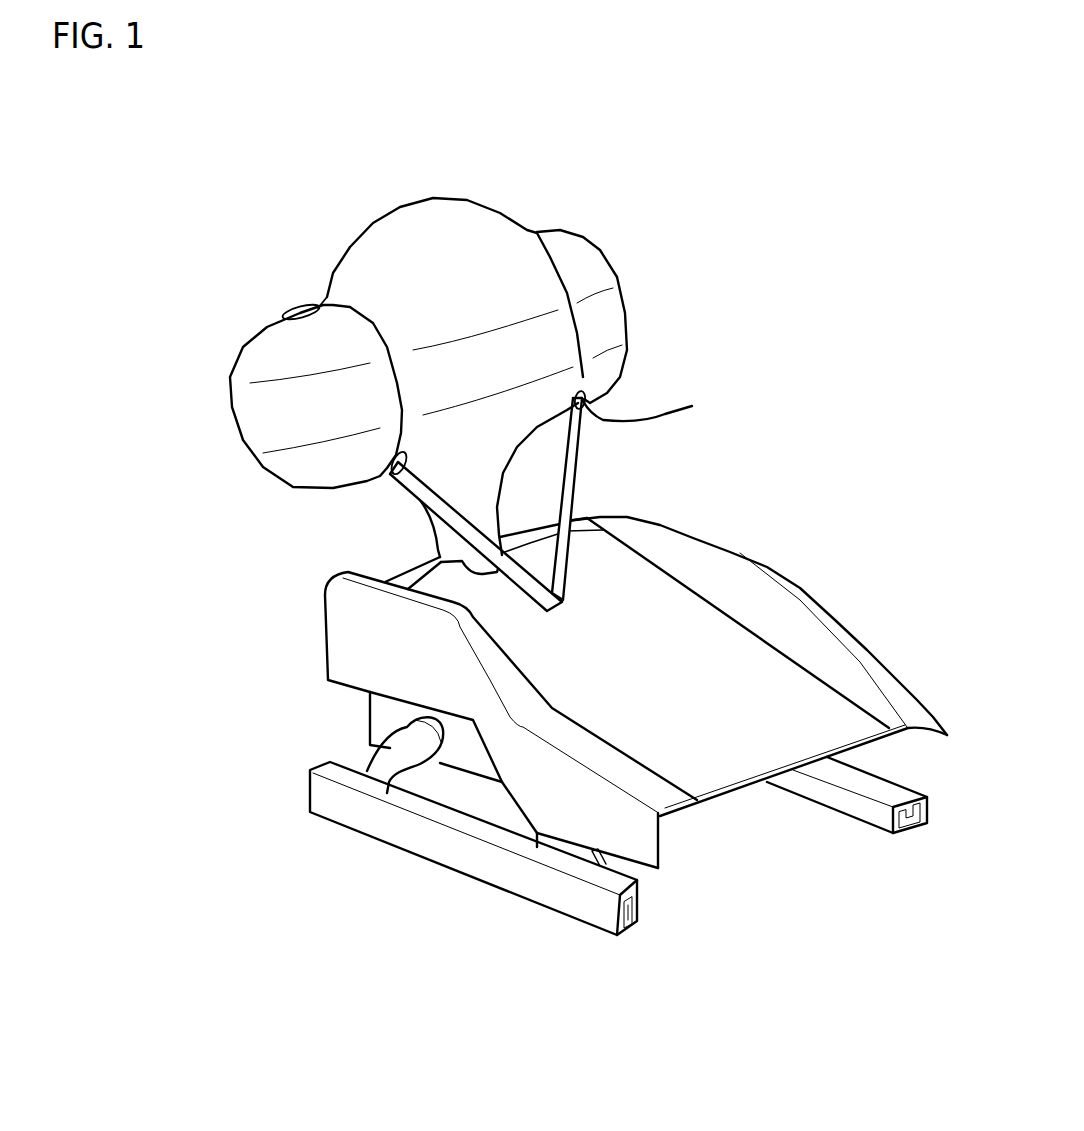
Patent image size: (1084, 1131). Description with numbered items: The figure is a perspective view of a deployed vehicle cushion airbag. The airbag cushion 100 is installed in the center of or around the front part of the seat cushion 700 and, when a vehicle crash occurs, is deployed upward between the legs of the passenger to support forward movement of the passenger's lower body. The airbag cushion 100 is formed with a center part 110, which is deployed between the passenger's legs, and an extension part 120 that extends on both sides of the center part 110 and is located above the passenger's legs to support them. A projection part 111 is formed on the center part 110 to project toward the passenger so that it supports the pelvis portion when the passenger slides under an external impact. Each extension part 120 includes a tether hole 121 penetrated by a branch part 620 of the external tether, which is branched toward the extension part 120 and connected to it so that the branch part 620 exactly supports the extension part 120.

The airbag cushion 100 is at (477, 333).
The center part 110 is at (512, 456).
The projection part 111 is at (449, 220).
The extension part 120 is at (613, 322).
The tether hole 121 is at (298, 305).
The branch part 620 is at (565, 497).
The seat cushion 700 is at (818, 581).